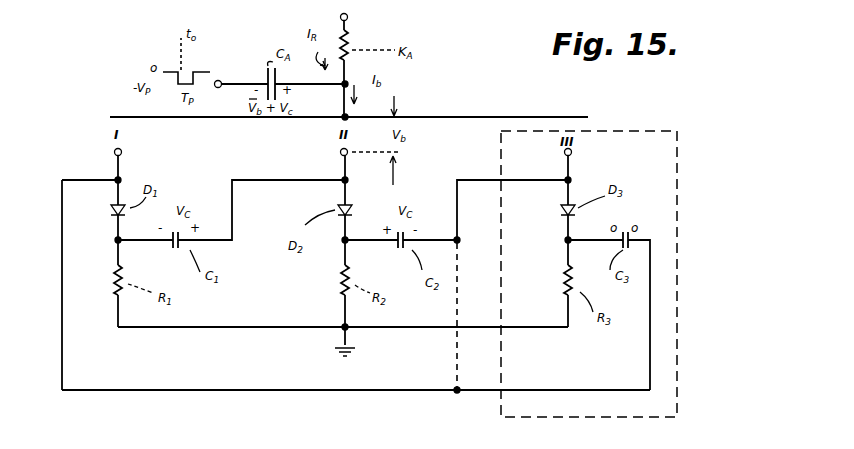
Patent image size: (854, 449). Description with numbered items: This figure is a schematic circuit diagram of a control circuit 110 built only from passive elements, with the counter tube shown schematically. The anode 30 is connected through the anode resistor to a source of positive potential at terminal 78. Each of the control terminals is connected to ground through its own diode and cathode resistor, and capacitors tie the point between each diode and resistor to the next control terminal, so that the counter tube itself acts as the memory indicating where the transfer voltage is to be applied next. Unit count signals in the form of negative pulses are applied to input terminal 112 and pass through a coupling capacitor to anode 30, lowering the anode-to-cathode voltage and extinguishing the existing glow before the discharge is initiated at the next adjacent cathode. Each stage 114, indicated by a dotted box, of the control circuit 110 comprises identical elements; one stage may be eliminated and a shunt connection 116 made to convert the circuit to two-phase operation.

The terminal 78 is at (350, 19).
The input terminal 112 is at (222, 80).
The anode 30 is at (487, 116).
The stage 114 is at (655, 128).
The shunt connection 116 is at (450, 346).
The control circuit 110 is at (222, 403).